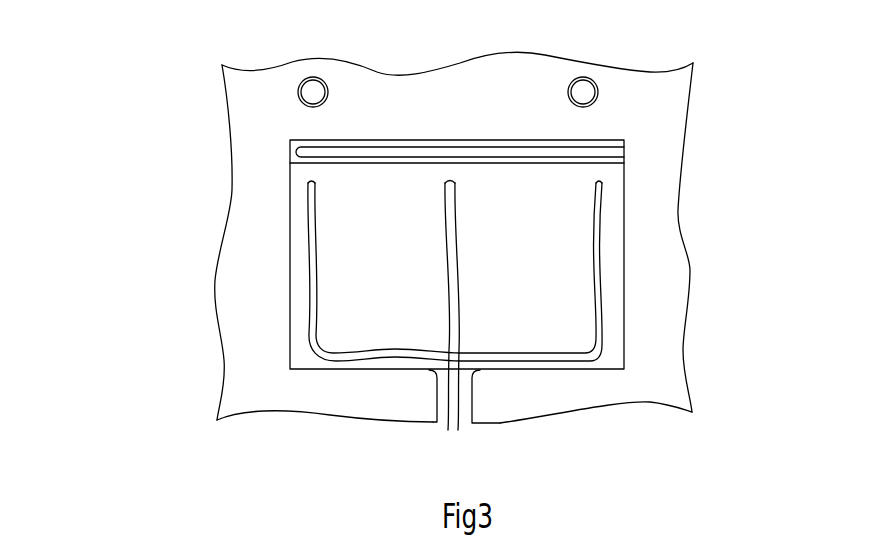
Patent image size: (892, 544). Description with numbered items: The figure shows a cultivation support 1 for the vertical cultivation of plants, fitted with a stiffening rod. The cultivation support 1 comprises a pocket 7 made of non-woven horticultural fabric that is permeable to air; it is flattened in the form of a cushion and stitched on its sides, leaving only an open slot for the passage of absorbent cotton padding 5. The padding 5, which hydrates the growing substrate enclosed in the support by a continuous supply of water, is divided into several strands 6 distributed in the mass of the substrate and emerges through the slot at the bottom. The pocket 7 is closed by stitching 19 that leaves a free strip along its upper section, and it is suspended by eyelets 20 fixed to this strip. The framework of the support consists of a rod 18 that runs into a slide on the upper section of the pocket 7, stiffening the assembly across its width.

The cultivation support 1 is at (188, 303).
The absorbent cotton padding 5 is at (453, 413).
The strands 6 is at (600, 211).
The pocket 7 is at (230, 163).
The rod 18 is at (610, 153).
The stitching 19 is at (624, 272).
The eyelets 20 is at (588, 87).